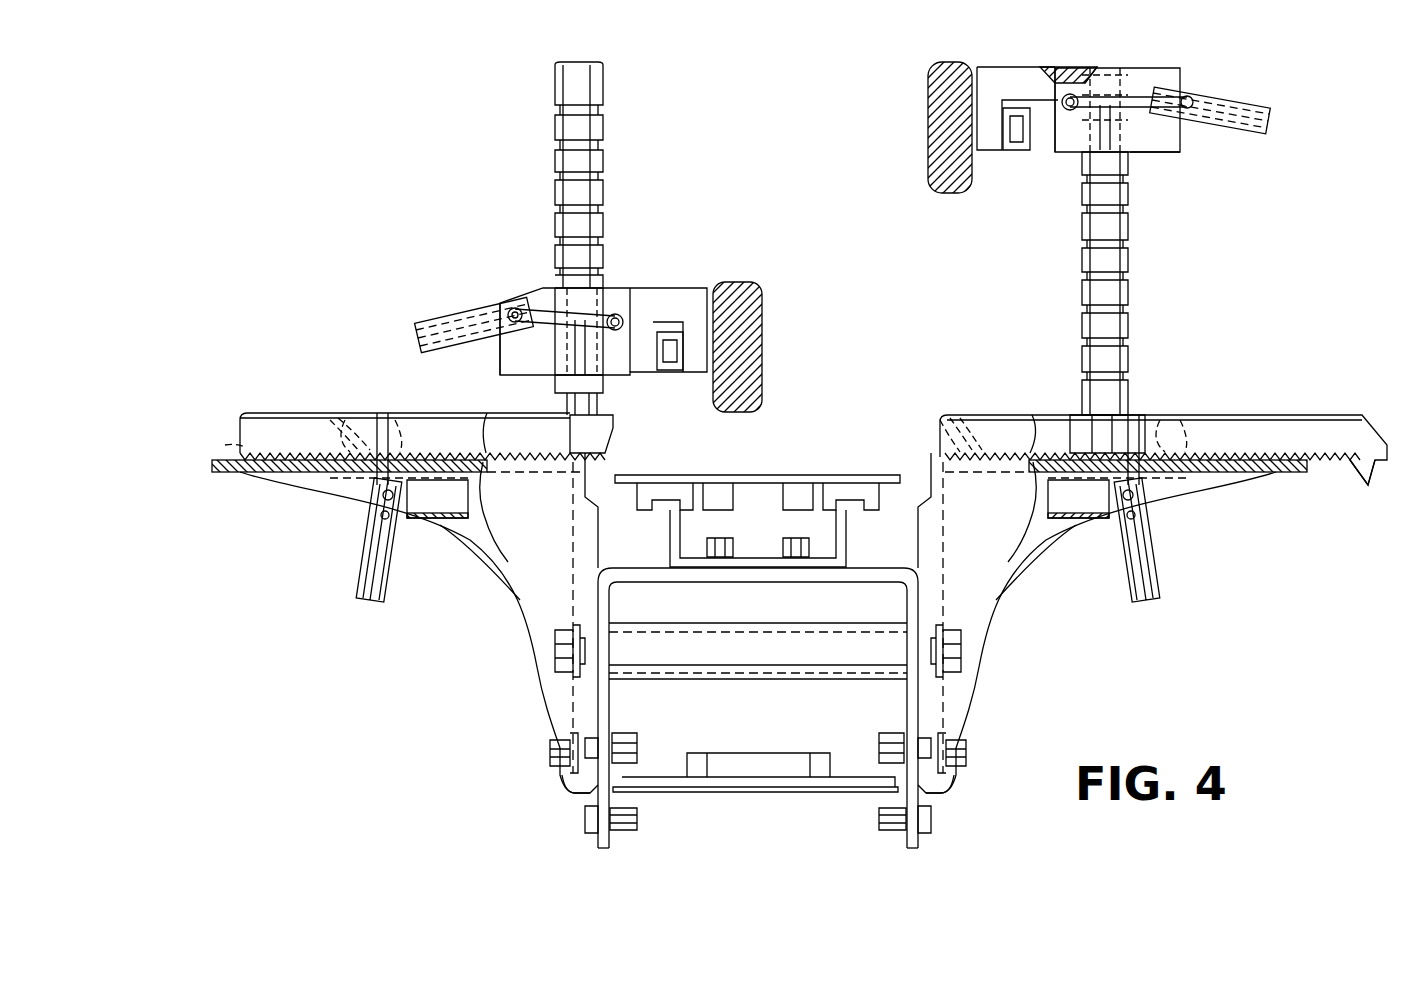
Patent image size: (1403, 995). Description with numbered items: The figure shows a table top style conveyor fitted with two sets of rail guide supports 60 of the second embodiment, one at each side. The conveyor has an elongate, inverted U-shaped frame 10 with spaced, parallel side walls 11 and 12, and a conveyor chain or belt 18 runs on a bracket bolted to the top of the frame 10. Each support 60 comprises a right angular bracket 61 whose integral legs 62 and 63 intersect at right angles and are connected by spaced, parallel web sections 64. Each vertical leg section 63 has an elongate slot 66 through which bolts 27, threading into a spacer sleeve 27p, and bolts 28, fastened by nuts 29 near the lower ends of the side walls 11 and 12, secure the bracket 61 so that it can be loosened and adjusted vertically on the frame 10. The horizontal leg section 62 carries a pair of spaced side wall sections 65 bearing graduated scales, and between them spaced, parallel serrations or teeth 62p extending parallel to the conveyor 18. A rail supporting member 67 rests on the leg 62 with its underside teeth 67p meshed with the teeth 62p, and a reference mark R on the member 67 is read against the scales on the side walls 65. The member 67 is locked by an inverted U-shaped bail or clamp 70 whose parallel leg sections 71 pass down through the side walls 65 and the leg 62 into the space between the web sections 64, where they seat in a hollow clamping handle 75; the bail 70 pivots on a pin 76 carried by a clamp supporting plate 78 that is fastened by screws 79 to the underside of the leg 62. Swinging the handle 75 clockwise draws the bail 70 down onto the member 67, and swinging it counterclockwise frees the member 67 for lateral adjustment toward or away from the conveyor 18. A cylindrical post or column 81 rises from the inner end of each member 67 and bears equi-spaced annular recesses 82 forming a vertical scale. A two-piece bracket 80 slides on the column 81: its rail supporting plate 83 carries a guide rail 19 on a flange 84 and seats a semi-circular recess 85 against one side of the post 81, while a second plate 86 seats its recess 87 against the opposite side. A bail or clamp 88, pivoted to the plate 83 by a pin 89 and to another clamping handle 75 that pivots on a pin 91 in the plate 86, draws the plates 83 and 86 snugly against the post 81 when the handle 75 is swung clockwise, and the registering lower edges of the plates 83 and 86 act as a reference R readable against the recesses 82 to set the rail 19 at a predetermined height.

The frame 10 is at (740, 800).
The side wall 11 is at (598, 848).
The side wall 12 is at (918, 848).
The conveyor chain or belt 18 is at (780, 475).
The guide rail 19 is at (760, 300).
The bolt 27 is at (540, 653).
The spacer sleeve 27p is at (706, 624).
The bolt 28 is at (550, 752).
The nut 29 is at (628, 733).
The rail guide support 60 is at (330, 310).
The right angular bracket 61 is at (520, 598).
The bracket leg section 62 is at (215, 472).
The serrations or teeth 62p is at (235, 447).
The bracket leg section 63 is at (572, 793).
The web section 64 is at (505, 575).
The side wall section 65 is at (268, 430).
The elongate slot 66 is at (590, 516).
The rail supporting member 67 is at (300, 432).
The serrations or teeth 67p is at (612, 455).
The bail or clamp 70 is at (345, 420).
The leg section 71 is at (360, 440).
The clamping handle 75 is at (358, 585).
The pin 76 is at (385, 490).
The clamp supporting plate 78 is at (412, 518).
The screw 79 is at (398, 413).
The side rail supporting bracket 80 is at (670, 283).
The side rail supporting post or column 81 is at (605, 92).
The annular recess or notch 82 is at (600, 205).
The rail supporting plate 83 is at (680, 288).
The flange 84 is at (690, 372).
The semi-circular recess 85 is at (1085, 67).
The second plate 86 is at (540, 288).
The semi-circular recess 87 is at (1105, 68).
The bail or clamp 88 is at (618, 312).
The pin 89 is at (605, 330).
The pin 91 is at (512, 308).
The reference mark or line R is at (1150, 152).